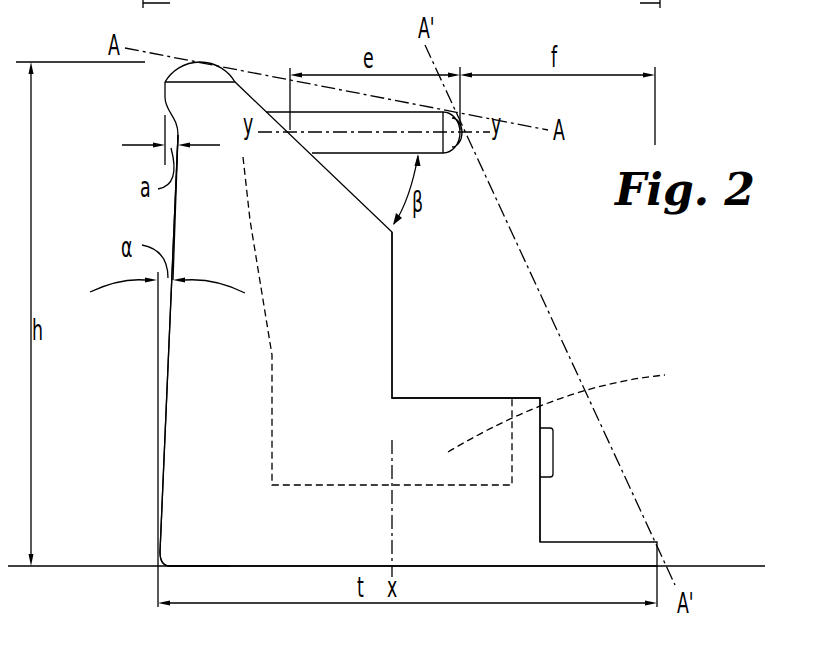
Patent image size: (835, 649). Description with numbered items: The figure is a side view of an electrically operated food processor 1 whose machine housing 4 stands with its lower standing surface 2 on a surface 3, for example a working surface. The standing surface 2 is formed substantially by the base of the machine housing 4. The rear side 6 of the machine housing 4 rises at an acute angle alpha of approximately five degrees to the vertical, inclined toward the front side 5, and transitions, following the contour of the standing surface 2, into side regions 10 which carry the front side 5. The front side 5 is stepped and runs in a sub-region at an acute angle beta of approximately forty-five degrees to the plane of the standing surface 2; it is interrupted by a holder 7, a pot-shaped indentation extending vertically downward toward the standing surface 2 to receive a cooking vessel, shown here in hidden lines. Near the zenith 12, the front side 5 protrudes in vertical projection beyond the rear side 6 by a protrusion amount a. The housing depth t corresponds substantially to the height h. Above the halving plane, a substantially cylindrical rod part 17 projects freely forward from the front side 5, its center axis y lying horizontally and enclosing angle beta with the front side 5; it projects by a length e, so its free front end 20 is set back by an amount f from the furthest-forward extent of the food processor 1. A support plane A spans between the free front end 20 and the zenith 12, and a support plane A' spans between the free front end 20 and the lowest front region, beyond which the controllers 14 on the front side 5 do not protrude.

The food processor 1 is at (618, 282).
The standing surface 2 is at (218, 566).
The surface 3 is at (720, 566).
The machine housing 4 is at (188, 422).
The front side 5 is at (500, 355).
The rear side 6 is at (168, 372).
The holder 7 is at (564, 408).
The side regions 10 is at (198, 483).
The zenith 12 is at (197, 63).
The controllers 14 is at (547, 458).
The rod parts 17 is at (320, 137).
The free front end 20 is at (461, 140).